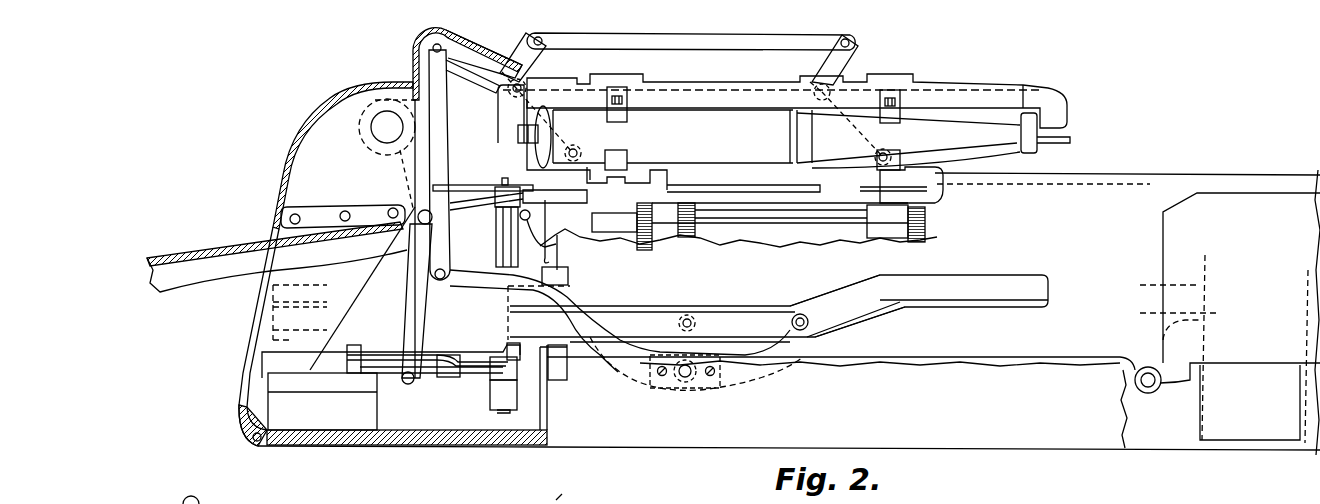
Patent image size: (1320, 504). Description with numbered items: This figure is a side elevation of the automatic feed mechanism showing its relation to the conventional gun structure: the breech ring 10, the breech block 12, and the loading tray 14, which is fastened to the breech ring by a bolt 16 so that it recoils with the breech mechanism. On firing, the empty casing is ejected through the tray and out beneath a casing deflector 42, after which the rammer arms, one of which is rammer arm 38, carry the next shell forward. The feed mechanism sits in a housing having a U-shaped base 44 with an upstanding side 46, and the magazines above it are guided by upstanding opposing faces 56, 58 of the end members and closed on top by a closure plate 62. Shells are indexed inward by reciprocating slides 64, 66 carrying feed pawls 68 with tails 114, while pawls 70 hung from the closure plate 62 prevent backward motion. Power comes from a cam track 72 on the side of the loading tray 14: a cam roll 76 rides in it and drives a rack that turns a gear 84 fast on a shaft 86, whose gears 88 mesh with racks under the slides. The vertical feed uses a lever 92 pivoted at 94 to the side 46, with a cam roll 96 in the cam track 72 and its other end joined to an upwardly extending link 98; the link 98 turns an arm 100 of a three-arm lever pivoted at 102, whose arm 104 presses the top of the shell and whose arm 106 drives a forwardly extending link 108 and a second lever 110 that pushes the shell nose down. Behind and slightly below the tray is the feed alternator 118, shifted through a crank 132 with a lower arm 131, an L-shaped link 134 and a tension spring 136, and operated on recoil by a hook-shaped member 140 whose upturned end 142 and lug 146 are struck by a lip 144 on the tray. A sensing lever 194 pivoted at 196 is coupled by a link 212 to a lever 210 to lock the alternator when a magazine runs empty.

The breech ring 10 is at (1230, 231).
The breech block 12 is at (1232, 413).
The loading tray 14 is at (946, 338).
The bolt 16 is at (1148, 380).
The rammer arm 38 is at (568, 275).
The casing deflector 42 is at (215, 237).
The U-shaped base 44 is at (712, 459).
The upstanding side 46 is at (769, 423).
The upstanding opposing face 56 is at (1037, 123).
The upstanding opposing face 58 is at (517, 133).
The closure plate 62 is at (756, 82).
The reciprocating slide 64 is at (903, 172).
The reciprocating slide 66 is at (628, 163).
The feed pawl 68 is at (627, 150).
The pawl 70 is at (622, 113).
The cam track 72 is at (848, 303).
The cam roll 76 is at (678, 315).
The gear 84 is at (682, 238).
The shaft 86 is at (750, 220).
The gear 88 is at (643, 247).
The lever 92 is at (612, 350).
The pivot 94 is at (670, 380).
The cam roll 96 is at (807, 327).
The link 98 is at (446, 133).
The arm 100 is at (472, 62).
The pivot 102 is at (493, 85).
The arm 104 is at (570, 138).
The arm 106 is at (528, 50).
The link 108 is at (695, 36).
The second lever 110 is at (847, 52).
The tail 114 is at (622, 187).
The feed alternator 118 is at (284, 390).
The lower arm 131 is at (437, 370).
The crank 132 is at (496, 255).
The L-shaped link 134 is at (462, 183).
The tension spring 136 is at (420, 193).
The hook-shaped member 140 is at (430, 350).
The upturned end 142 is at (545, 352).
The lip 144 is at (503, 348).
The lug 146 is at (350, 333).
The sensing lever 194 is at (458, 221).
The pivot 196 is at (558, 247).
The lever 210 is at (390, 377).
The link 212 is at (418, 300).